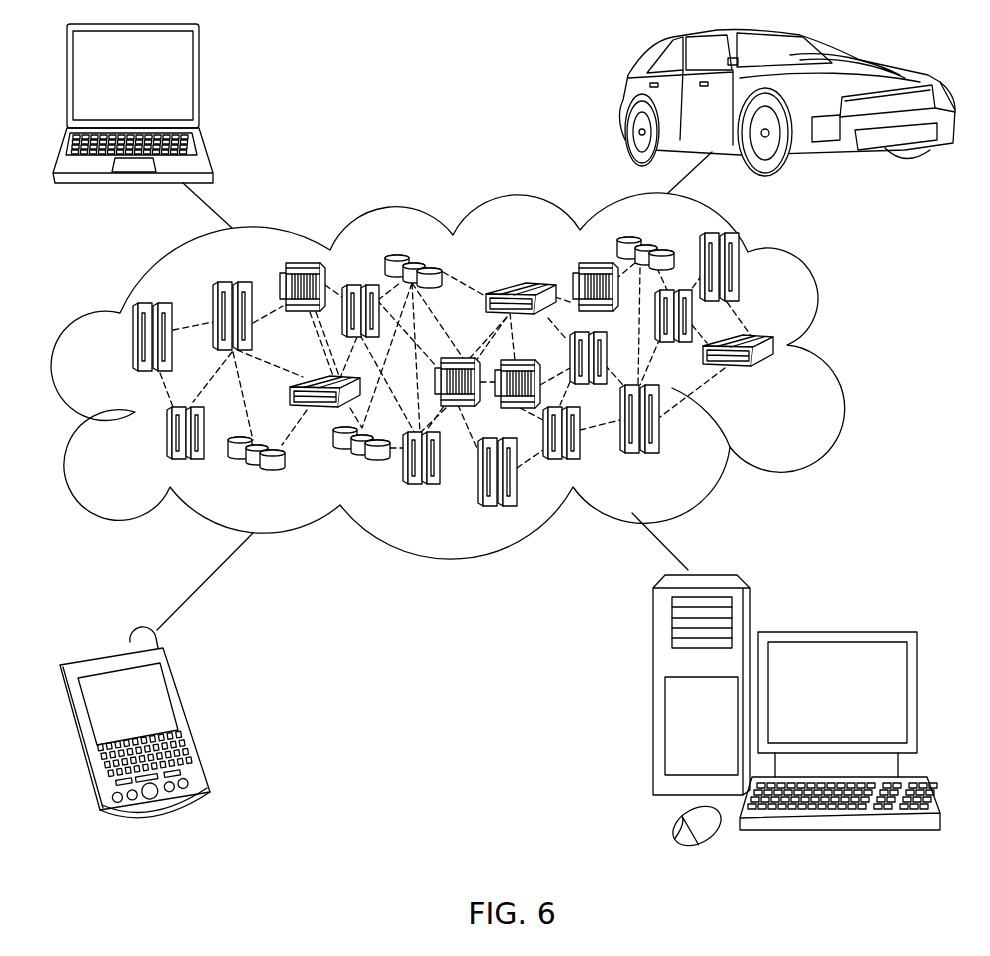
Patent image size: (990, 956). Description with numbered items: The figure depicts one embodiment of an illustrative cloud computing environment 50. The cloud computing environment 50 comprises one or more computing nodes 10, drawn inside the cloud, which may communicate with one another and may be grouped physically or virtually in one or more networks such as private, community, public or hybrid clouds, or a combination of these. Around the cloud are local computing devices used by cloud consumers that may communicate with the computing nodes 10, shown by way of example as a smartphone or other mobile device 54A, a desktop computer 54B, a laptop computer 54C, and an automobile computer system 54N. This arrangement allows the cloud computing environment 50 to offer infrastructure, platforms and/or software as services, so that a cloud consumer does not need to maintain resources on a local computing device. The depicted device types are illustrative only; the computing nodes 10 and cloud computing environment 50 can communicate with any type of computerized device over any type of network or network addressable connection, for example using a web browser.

The computing nodes 10 is at (778, 382).
The cloud computing environment 50 is at (835, 350).
The smartphone or other mobile device 54A is at (192, 718).
The desktop computer 54B is at (835, 632).
The laptop computer 54C is at (199, 84).
The automobile computer system 54N is at (622, 100).